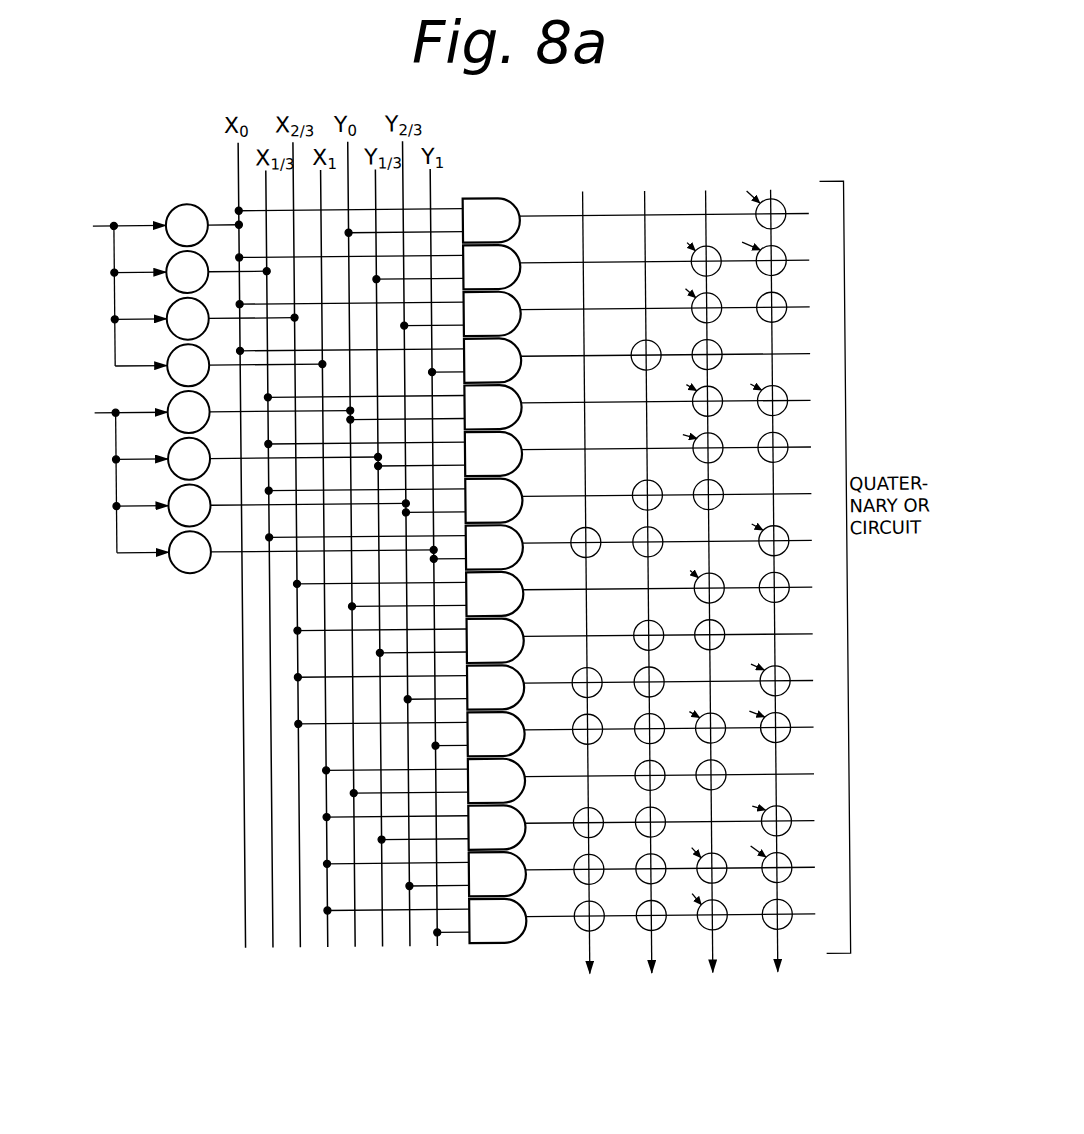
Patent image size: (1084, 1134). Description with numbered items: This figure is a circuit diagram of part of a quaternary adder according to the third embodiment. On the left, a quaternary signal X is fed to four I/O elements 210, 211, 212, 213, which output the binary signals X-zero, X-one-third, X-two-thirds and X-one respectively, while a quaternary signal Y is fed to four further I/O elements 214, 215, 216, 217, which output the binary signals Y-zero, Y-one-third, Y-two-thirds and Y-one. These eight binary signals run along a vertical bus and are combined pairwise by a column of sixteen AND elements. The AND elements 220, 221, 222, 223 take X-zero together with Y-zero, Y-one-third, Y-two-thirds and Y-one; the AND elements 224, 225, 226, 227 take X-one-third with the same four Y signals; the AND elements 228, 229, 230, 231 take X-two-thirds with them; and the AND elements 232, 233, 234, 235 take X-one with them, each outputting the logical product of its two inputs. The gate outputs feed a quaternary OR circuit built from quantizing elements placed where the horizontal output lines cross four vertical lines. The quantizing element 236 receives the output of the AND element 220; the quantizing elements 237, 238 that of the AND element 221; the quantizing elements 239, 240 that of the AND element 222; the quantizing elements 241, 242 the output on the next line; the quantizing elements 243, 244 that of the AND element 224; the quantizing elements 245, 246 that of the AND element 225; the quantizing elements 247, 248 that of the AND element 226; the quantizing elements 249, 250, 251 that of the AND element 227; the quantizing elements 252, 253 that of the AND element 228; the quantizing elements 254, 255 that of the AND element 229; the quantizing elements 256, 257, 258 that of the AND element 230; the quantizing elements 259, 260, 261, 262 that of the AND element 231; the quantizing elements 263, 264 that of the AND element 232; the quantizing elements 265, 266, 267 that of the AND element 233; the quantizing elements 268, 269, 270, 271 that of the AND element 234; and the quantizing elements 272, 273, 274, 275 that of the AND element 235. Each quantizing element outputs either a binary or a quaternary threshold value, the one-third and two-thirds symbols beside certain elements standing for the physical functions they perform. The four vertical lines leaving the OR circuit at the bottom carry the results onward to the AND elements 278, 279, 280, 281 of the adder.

The I/O element 210 is at (174, 216).
The I/O element 211 is at (174, 266).
The I/O element 212 is at (174, 307).
The I/O element 213 is at (174, 354).
The I/O element 214 is at (173, 409).
The I/O element 215 is at (173, 452).
The I/O element 216 is at (172, 499).
The I/O element 217 is at (172, 541).
The AND element 220 is at (522, 206).
The AND element 221 is at (522, 253).
The AND element 222 is at (522, 299).
The AND element 223 is at (521, 346).
The AND element 224 is at (521, 393).
The AND element 225 is at (520, 440).
The AND element 226 is at (520, 486).
The AND element 227 is at (519, 533).
The AND element 228 is at (519, 580).
The AND element 229 is at (518, 626).
The AND element 230 is at (518, 673).
The AND element 231 is at (517, 720).
The AND element 232 is at (517, 765).
The AND element 233 is at (516, 813).
The AND element 234 is at (516, 855).
The AND element 235 is at (516, 903).
The quantizing element 236 is at (784, 205).
The quantizing element 237 is at (697, 263).
The quantizing element 238 is at (784, 257).
The quantizing element 239 is at (712, 295).
The quantizing element 240 is at (784, 287).
The quantizing element 241 is at (650, 342).
The quantizing element 242 is at (709, 342).
The quantizing element 243 is at (712, 417).
The quantizing element 244 is at (783, 384).
The quantizing element 245 is at (711, 465).
The quantizing element 246 is at (782, 434).
The quantizing element 247 is at (643, 485).
The quantizing element 248 is at (699, 485).
The quantizing element 249 is at (583, 533).
The quantizing element 250 is at (650, 533).
The quantizing element 251 is at (776, 526).
The quantizing element 252 is at (703, 575).
The quantizing element 253 is at (778, 569).
The quantizing element 254 is at (642, 623).
The quantizing element 255 is at (707, 623).
The quantizing element 256 is at (582, 668).
The quantizing element 257 is at (646, 672).
The quantizing element 258 is at (777, 666).
The quantizing element 259 is at (586, 718).
The quantizing element 260 is at (648, 743).
The quantizing element 261 is at (711, 743).
The quantizing element 262 is at (773, 713).
The quantizing element 263 is at (638, 771).
The quantizing element 264 is at (705, 793).
The quantizing element 265 is at (606, 805).
The quantizing element 266 is at (647, 838).
The quantizing element 267 is at (778, 809).
The quantizing element 268 is at (579, 861).
The quantizing element 269 is at (645, 882).
The quantizing element 270 is at (713, 878).
The quantizing element 271 is at (777, 851).
The quantizing element 272 is at (589, 931).
The quantizing element 273 is at (649, 931).
The quantizing element 274 is at (711, 932).
The quantizing element 275 is at (779, 932).
The AND element 278 is at (588, 599).
The AND element 279 is at (653, 599).
The AND element 280 is at (711, 598).
The AND element 281 is at (778, 598).